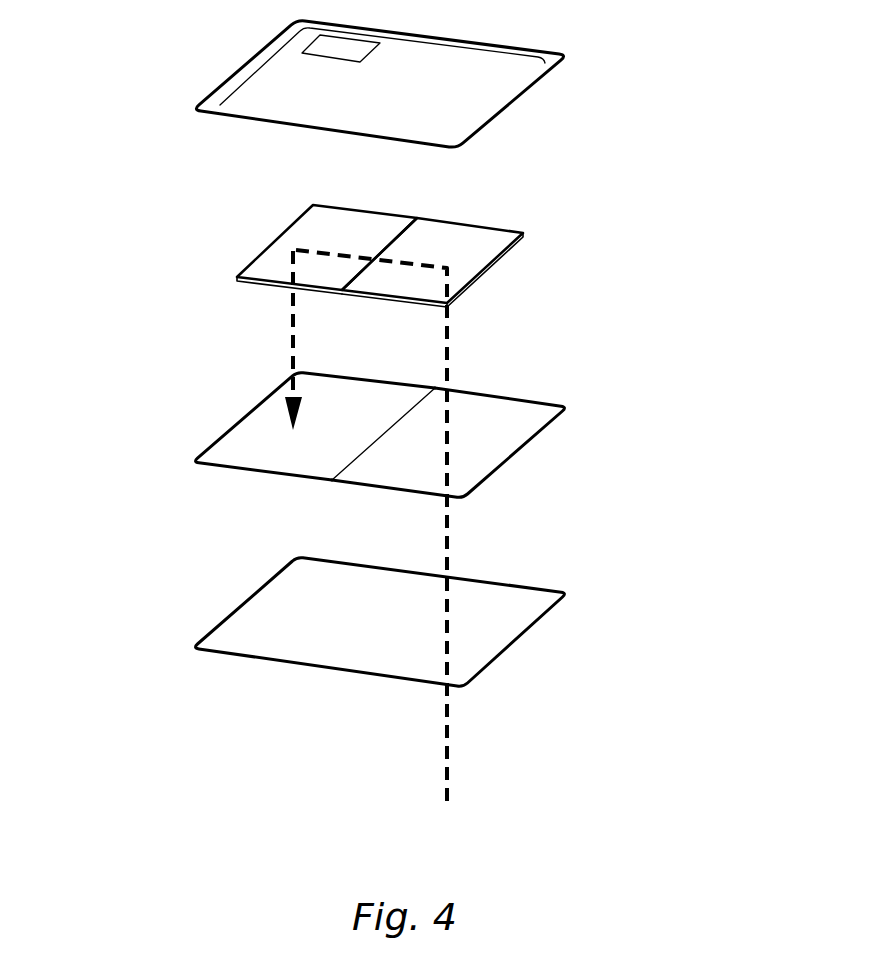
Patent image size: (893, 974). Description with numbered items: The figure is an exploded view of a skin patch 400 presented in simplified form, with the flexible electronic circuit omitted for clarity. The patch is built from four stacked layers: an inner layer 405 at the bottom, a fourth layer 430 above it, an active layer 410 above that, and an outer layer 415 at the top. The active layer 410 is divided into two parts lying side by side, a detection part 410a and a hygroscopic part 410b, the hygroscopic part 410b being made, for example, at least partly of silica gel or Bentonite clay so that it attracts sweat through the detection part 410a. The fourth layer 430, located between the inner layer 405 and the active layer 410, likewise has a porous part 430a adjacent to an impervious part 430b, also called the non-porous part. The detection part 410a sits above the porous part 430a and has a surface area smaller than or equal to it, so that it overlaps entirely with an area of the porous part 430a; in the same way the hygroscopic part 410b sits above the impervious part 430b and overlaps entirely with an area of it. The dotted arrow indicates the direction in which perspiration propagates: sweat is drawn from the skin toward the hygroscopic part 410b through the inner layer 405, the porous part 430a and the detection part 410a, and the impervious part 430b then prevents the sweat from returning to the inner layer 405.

The display assembly 400 is at (117, 580).
The inner layer 405 is at (557, 610).
The active layer 410 is at (457, 250).
The detection part 410a is at (485, 255).
The hygroscopic part 410b is at (265, 263).
The outer layer 415 is at (557, 70).
The fourth layer 430 is at (427, 445).
The porous part 430a is at (508, 446).
The impervious part 430b is at (208, 447).